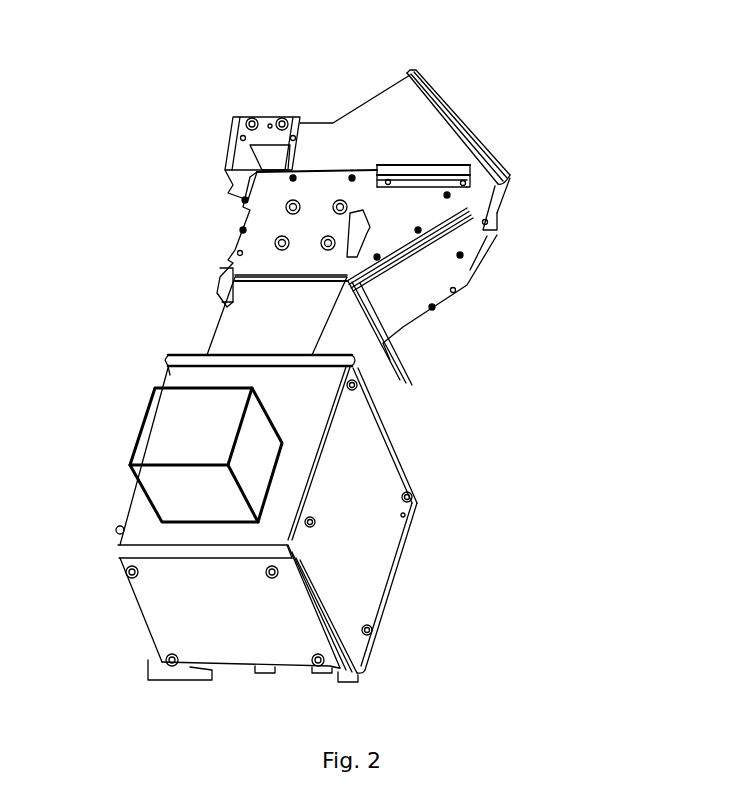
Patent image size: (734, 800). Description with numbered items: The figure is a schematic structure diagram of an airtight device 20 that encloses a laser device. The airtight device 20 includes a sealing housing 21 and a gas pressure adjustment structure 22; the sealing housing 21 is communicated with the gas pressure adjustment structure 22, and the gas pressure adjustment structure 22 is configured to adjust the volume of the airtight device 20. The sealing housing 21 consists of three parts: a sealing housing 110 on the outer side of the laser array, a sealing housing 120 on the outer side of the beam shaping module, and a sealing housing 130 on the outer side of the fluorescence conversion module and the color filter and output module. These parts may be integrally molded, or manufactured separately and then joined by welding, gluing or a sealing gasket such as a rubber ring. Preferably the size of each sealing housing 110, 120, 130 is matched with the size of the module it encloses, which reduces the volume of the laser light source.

The airtight device 20 is at (450, 113).
The sealing housing 21 is at (172, 357).
The gas pressure adjustment structure 22 is at (185, 425).
The sealing housing on an outer side of the laser array 110 is at (359, 522).
The sealing housing on an outer side of the beam shaping module 120 is at (386, 364).
The sealing housing on an outer side of the fluorescence conversion module and the c 130 is at (443, 271).